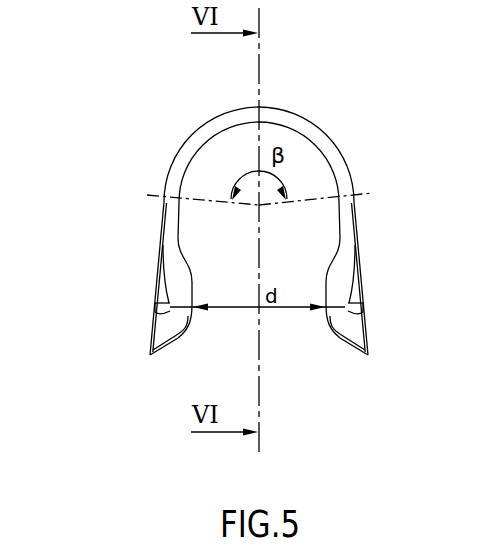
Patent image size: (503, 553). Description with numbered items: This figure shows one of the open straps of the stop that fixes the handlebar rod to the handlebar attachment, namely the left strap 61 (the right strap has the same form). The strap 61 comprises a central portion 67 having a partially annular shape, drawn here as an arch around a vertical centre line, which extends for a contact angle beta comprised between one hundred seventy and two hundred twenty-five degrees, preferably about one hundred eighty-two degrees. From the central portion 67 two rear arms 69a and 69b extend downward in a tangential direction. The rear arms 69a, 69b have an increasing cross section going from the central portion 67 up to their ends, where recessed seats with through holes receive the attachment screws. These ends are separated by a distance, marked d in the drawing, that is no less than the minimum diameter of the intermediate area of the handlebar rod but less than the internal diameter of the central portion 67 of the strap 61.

The left strap 61 is at (334, 53).
The central portion 67 is at (322, 143).
The rear arm 69a is at (348, 228).
The rear arm 69b is at (168, 216).